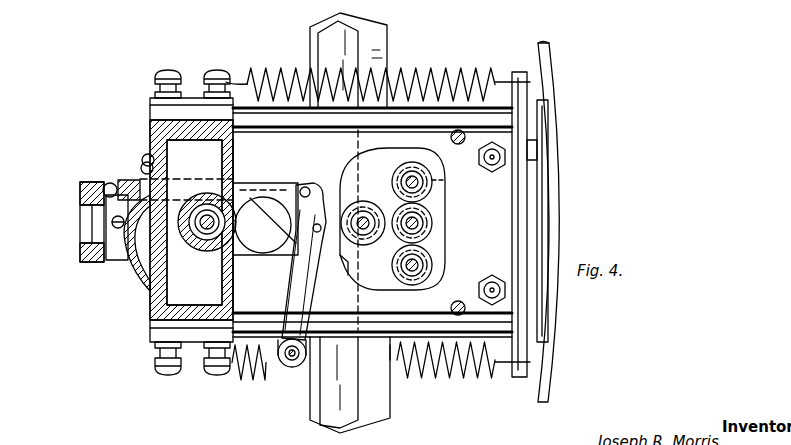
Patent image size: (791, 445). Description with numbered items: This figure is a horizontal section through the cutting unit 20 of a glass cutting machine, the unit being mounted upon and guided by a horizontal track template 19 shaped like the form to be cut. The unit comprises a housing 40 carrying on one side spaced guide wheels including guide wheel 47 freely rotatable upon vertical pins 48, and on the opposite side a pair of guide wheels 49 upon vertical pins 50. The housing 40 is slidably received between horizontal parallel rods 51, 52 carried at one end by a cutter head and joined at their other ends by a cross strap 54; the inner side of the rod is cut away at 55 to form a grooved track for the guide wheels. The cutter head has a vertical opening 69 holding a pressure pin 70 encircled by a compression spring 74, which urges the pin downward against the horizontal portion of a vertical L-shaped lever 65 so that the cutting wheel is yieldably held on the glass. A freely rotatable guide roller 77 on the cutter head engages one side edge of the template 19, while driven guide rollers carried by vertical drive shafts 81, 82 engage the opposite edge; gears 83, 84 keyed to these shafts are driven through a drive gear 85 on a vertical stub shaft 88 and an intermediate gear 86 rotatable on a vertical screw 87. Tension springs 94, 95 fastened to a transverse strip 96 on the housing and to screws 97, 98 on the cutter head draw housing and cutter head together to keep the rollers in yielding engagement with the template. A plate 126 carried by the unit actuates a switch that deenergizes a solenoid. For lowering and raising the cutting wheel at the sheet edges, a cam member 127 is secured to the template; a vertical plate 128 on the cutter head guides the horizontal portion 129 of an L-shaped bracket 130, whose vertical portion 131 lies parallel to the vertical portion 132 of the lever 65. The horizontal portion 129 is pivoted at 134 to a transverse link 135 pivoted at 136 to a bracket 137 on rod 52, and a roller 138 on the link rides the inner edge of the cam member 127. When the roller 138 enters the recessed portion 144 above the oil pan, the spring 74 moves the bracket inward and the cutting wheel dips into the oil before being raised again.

The track template 19 is at (378, 35).
The cutting unit 20 is at (464, 68).
The housing 40 is at (440, 318).
The guide wheel 47 is at (535, 150).
The vertical pin 48 is at (500, 157).
The guide wheel 49 is at (515, 322).
The vertical pin 50 is at (492, 280).
The horizontal rod 51 is at (272, 78).
The horizontal rod 52 is at (390, 348).
The cross strap 54 is at (552, 210).
The cut-away groove 55 is at (140, 278).
The L-shaped lever 65 is at (72, 246).
The vertical opening 69 is at (207, 230).
The pressure pin 70 is at (180, 230).
The compression spring 74 is at (196, 240).
The guide roller 77 is at (248, 262).
The vertical drive shaft 81 is at (420, 178).
The vertical drive shaft 82 is at (396, 290).
The gear 83 is at (445, 180).
The gear 84 is at (440, 266).
The drive gear 85 is at (344, 262).
The intermediate gear 86 is at (432, 215).
The vertical screw 87 is at (430, 230).
The vertical stub shaft 88 is at (366, 216).
The tension spring 94 is at (406, 67).
The tension spring 95 is at (462, 375).
The transverse strip 96 is at (515, 220).
The screw 97 is at (219, 68).
The screw 98 is at (205, 378).
The plate 126 is at (548, 104).
The cam member 127 is at (343, 430).
The vertical plate 128 is at (148, 156).
The horizontal portion 129 is at (254, 180).
The L-shaped bracket 130 is at (196, 172).
The vertical portion 131 is at (130, 178).
The vertical portion 132 is at (82, 190).
The pivot 134 is at (302, 182).
The transverse link 135 is at (281, 300).
The pivot 136 is at (303, 368).
The bracket 137 is at (288, 366).
The roller 138 is at (316, 234).
The recessed portion 144 is at (350, 316).